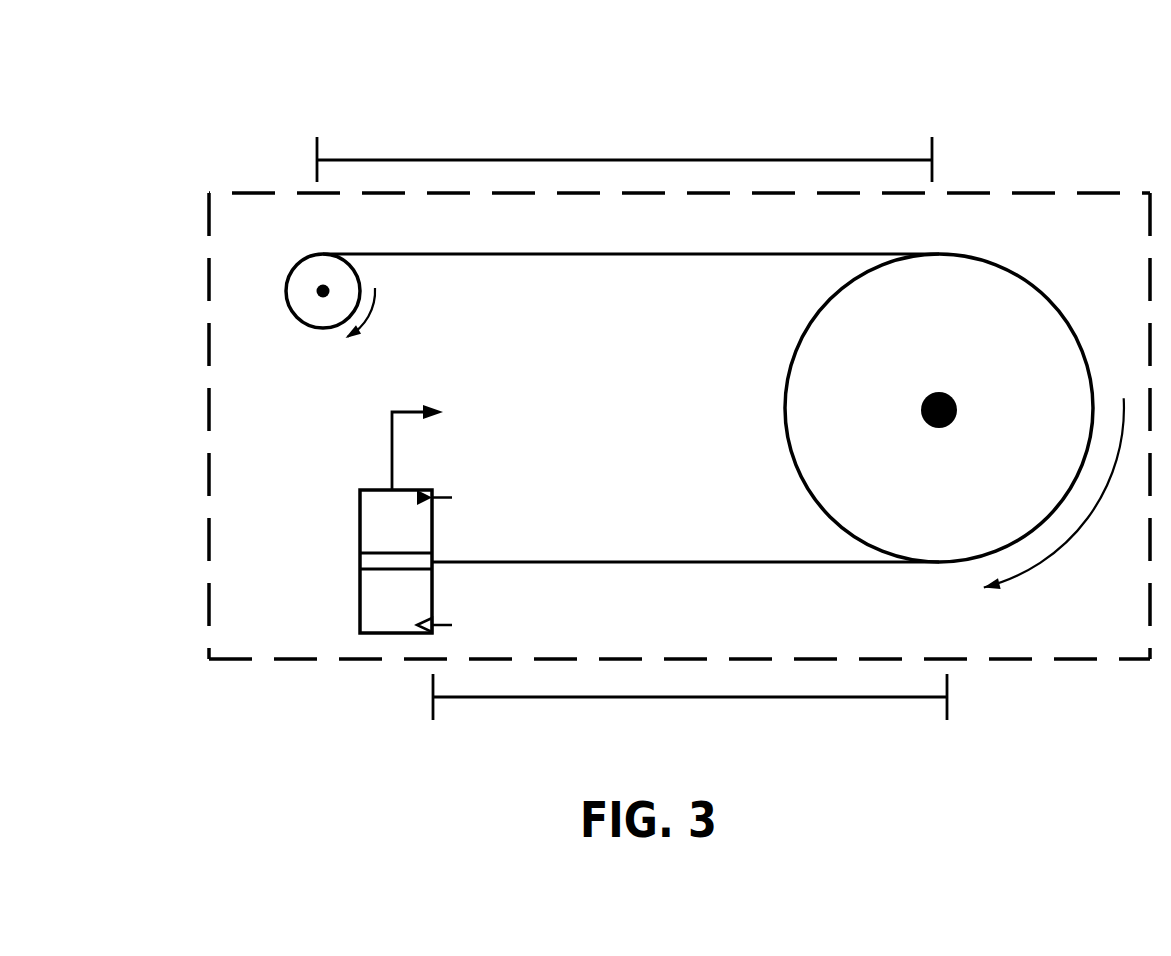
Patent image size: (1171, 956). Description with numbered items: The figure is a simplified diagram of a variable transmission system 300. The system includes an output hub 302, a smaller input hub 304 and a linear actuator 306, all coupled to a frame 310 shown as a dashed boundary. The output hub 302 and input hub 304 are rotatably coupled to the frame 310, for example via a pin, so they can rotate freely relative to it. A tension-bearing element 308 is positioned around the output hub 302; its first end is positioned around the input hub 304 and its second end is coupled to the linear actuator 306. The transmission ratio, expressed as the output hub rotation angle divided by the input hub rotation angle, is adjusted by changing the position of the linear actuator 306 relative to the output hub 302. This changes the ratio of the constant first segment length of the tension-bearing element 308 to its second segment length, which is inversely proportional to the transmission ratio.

The variable transmission system 300 is at (980, 68).
The output hub 302 is at (1032, 283).
The input hub 304 is at (285, 290).
The linear actuator 306 is at (358, 513).
The tension-bearing element 308 is at (578, 254).
The frame 310 is at (209, 542).